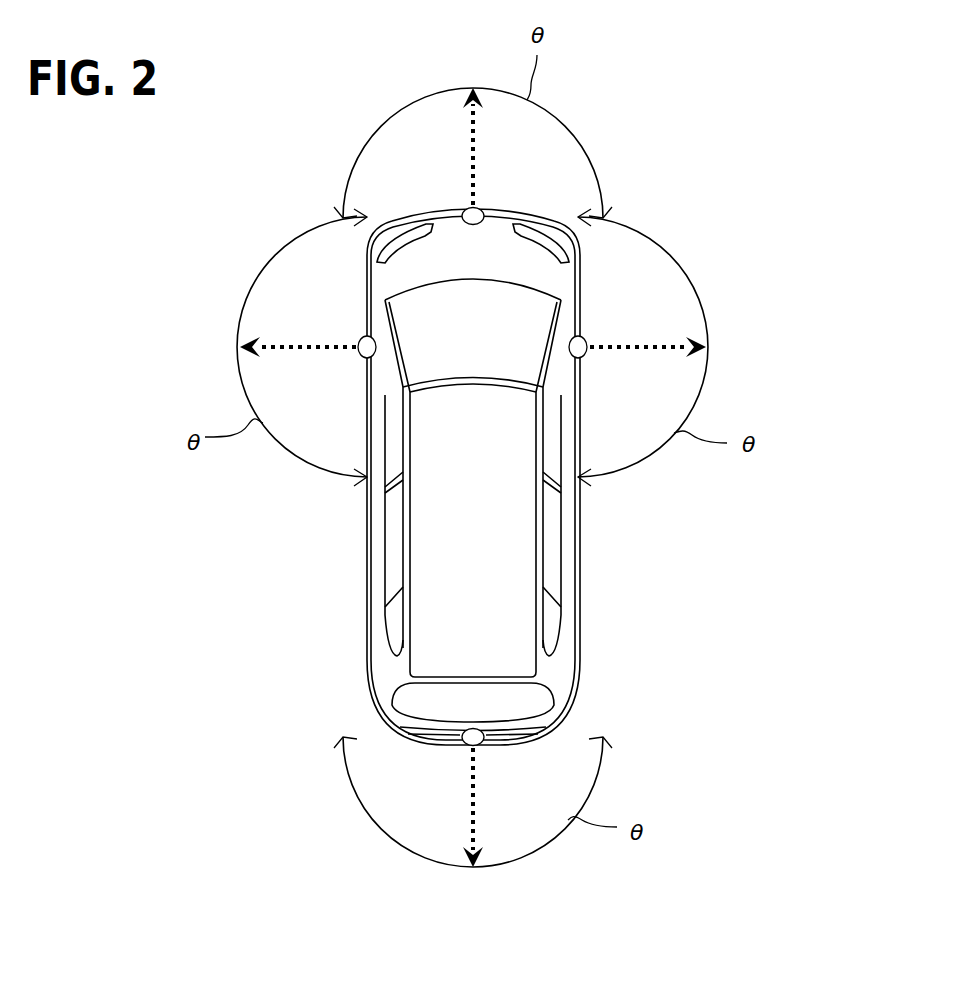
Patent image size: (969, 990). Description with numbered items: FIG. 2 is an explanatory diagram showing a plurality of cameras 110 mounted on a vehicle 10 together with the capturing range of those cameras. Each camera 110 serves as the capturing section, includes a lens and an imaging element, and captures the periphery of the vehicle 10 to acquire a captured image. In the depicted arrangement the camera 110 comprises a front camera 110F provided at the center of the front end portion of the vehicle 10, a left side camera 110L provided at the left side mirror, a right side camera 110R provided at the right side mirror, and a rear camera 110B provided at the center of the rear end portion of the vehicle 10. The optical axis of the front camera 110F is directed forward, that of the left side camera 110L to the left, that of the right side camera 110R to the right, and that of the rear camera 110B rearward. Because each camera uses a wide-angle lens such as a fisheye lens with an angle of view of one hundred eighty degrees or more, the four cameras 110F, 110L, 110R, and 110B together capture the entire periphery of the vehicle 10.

The vehicle 10 is at (367, 562).
The camera 110 is at (470, 513).
The front camera 110F is at (478, 209).
The left side camera 110L is at (362, 338).
The right side camera 110R is at (584, 338).
The rear camera 110B is at (467, 745).